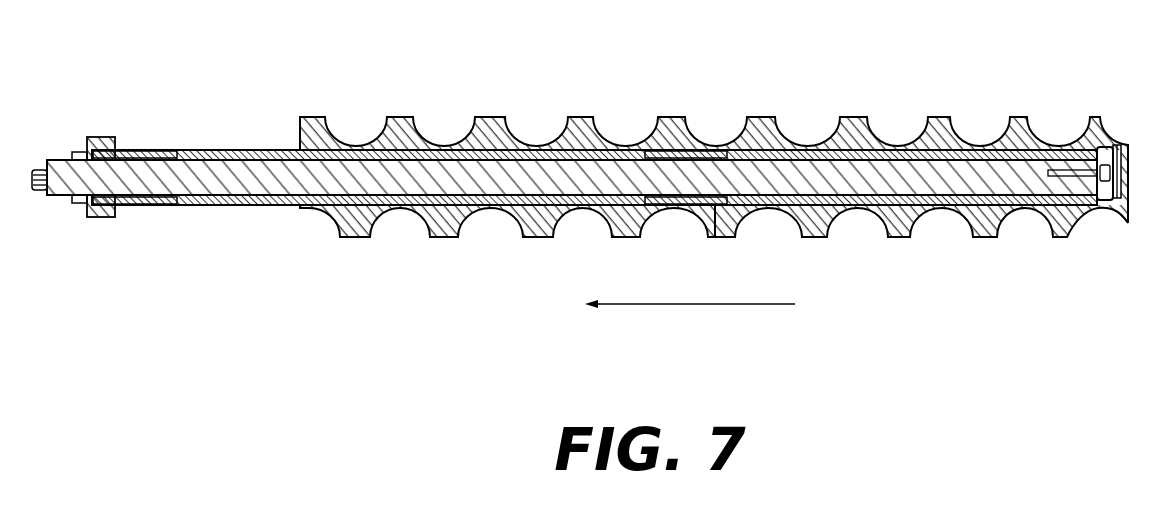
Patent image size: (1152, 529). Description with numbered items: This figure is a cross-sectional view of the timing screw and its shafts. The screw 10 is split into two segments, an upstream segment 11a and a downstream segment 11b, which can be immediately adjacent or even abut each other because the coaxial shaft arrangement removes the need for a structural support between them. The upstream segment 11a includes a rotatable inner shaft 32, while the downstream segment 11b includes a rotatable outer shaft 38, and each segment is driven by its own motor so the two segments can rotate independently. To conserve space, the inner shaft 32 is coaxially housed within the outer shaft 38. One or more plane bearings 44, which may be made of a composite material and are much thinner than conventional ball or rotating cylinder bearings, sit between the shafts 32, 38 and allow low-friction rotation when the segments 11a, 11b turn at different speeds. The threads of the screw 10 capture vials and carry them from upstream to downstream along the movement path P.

The screw 10 is at (1034, 66).
The upstream segment 11a is at (979, 232).
The downstream segment 11b is at (362, 235).
The inner shaft 32 is at (857, 167).
The outer shaft 38 is at (248, 152).
The plane bearings 44 is at (143, 150).
The movement path P is at (733, 305).